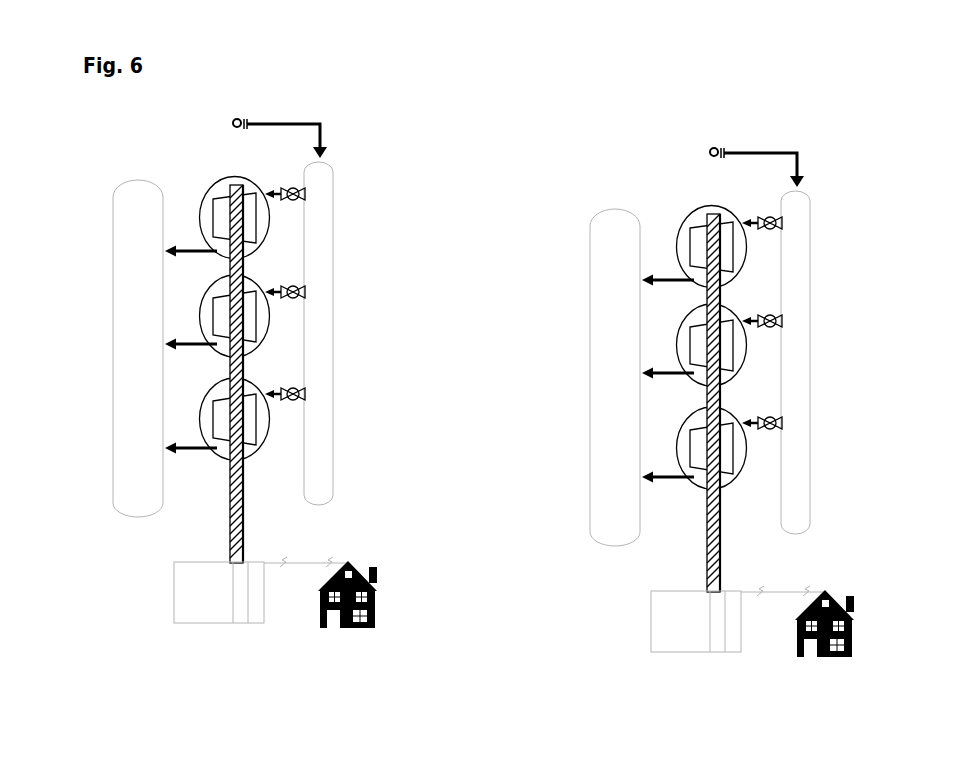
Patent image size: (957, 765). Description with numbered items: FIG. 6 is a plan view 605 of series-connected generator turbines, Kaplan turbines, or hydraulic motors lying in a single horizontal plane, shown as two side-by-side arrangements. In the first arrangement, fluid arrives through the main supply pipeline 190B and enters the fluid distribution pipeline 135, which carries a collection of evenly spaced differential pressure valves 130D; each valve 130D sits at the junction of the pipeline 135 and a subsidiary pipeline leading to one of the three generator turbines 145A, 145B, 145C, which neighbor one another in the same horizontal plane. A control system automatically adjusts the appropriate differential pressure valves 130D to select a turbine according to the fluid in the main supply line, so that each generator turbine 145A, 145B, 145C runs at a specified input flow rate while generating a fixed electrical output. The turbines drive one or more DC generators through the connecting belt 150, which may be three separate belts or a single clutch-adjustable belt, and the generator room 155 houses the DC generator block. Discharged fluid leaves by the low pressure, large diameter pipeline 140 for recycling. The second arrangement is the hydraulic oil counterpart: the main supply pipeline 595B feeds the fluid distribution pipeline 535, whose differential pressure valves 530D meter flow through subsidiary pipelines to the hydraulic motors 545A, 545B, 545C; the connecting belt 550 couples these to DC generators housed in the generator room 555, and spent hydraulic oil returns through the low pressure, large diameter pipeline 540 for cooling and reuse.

The low pressure and large diameter pipeline 140 is at (163, 197).
The fluid distribution pipeline 135 is at (332, 190).
The generator turbine 145A is at (252, 180).
The generator turbine 145B is at (200, 314).
The generator turbine 145C is at (270, 415).
The differential pressure valve 130D is at (297, 193).
The connecting belt 150 is at (238, 542).
The generator room 155 is at (219, 592).
The main supply pipeline 190B is at (267, 123).
The plan view 605 is at (915, 68).
The low pressure and large diameter pipeline 540 is at (632, 362).
The fluid distribution pipeline 535 is at (829, 355).
The hydraulic motor 545A is at (759, 212).
The hydraulic motor 545B is at (629, 341).
The hydraulic motor 545C is at (771, 454).
The differential pressure valve 530D is at (818, 323).
The connecting belt 550 is at (743, 403).
The generator room 555 is at (696, 621).
The main supply pipeline 595B is at (760, 140).